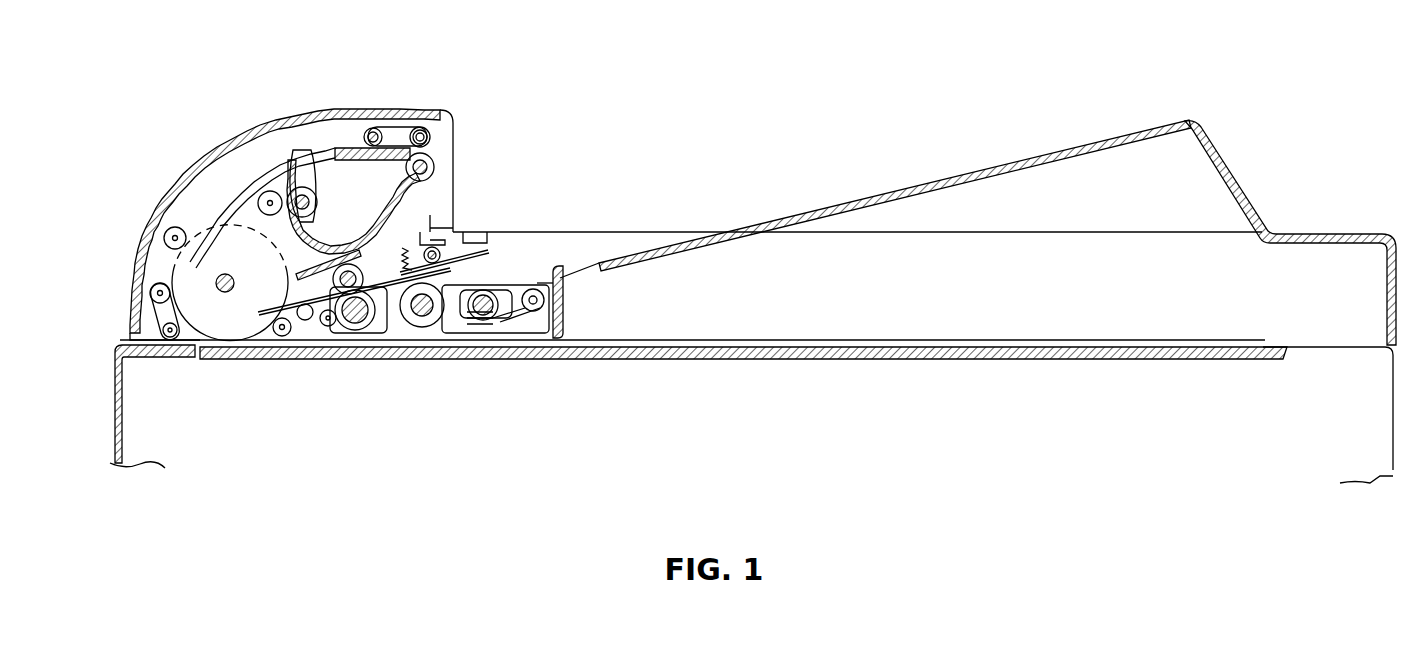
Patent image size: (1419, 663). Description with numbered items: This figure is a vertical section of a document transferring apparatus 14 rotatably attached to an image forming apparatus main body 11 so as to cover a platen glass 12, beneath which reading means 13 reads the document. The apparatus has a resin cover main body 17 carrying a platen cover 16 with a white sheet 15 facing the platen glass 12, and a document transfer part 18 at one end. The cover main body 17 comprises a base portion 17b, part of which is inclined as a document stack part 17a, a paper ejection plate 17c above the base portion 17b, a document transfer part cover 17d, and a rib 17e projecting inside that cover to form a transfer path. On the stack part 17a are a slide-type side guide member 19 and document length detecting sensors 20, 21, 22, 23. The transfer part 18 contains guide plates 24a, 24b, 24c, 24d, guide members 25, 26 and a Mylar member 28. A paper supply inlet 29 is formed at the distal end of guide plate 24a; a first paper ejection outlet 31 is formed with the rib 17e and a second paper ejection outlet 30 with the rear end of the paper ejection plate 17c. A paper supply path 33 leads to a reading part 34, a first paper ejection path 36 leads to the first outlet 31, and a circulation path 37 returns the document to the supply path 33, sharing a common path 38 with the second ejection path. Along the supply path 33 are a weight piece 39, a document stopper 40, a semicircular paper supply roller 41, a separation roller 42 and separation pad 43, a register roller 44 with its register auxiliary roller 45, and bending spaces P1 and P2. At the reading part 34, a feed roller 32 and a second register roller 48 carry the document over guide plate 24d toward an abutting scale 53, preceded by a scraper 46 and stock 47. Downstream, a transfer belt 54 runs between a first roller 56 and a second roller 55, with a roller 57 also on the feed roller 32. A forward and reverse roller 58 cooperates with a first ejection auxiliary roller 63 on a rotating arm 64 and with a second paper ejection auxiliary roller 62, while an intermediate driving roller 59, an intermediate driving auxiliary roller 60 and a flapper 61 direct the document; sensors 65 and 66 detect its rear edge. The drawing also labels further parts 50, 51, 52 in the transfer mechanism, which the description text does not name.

The image forming apparatus main body 11 is at (113, 396).
The platen glass 12 is at (690, 352).
The reading means 13 is at (222, 365).
The document transferring apparatus 14 is at (714, 140).
The white sheet 15 is at (940, 352).
The platen cover 16 is at (1113, 349).
The cover main body 17 is at (1211, 107).
The document stack part 17a is at (930, 183).
The base portion 17b is at (543, 352).
The paper ejection plate 17c is at (540, 232).
The document transfer part cover 17d is at (291, 140).
The rib 17e is at (213, 180).
The document transfer part 18 is at (189, 206).
The slide-type side guide member 19 is at (680, 235).
The document length detecting sensor 20 is at (629, 278).
The document length detecting sensor 21 is at (868, 210).
The document length detecting sensor 22 is at (992, 181).
The document length detecting sensor 23 is at (1120, 149).
The guide plate 24a is at (573, 278).
The guide plate 24b is at (473, 230).
The guide plate 24c is at (423, 236).
The guide plate 24d is at (183, 363).
The guide member 25 is at (398, 243).
The guide member 26 is at (205, 228).
The Mylar member 28 is at (295, 160).
The paper supply inlet 29 is at (575, 250).
The second paper ejection outlet 30 is at (418, 230).
The first paper ejection outlet 31 is at (434, 150).
The feed roller 32 is at (140, 249).
The paper supply path 33 is at (380, 328).
The reading part 34 is at (220, 362).
The first paper ejection path 36 is at (355, 150).
The circulation path 37 is at (287, 280).
The common path 38 is at (285, 142).
The weight piece 39 is at (515, 250).
The document stopper 40 is at (497, 330).
The paper supply roller 41 is at (470, 330).
The separation roller 42 is at (430, 330).
The separation pad 43 is at (398, 330).
The register roller 44 is at (344, 296).
The register auxiliary roller 45 is at (357, 332).
The scraper 46 is at (306, 330).
The stock 47 is at (298, 325).
The second register roller 48 is at (270, 342).
The screw 50 is at (448, 242).
The guide 51 is at (358, 238).
The separation pad 52 is at (263, 317).
The abutting scale 53 is at (156, 358).
The transfer belt 54 is at (150, 322).
The second roller 55 is at (150, 290).
The first roller 56 is at (162, 337).
The roller 57 is at (166, 235).
The forward and reverse roller 58 is at (412, 158).
The intermediate driving roller 59 is at (318, 142).
The intermediate driving auxiliary roller 60 is at (258, 206).
The flapper 61 is at (224, 254).
The second paper ejection auxiliary roller 62 is at (317, 206).
The first ejection auxiliary roller 63 is at (424, 130).
The rotating arm 64 is at (386, 130).
The sensor 65 is at (269, 166).
The sensor 66 is at (384, 201).
The space P1 is at (386, 330).
The space P2 is at (322, 328).